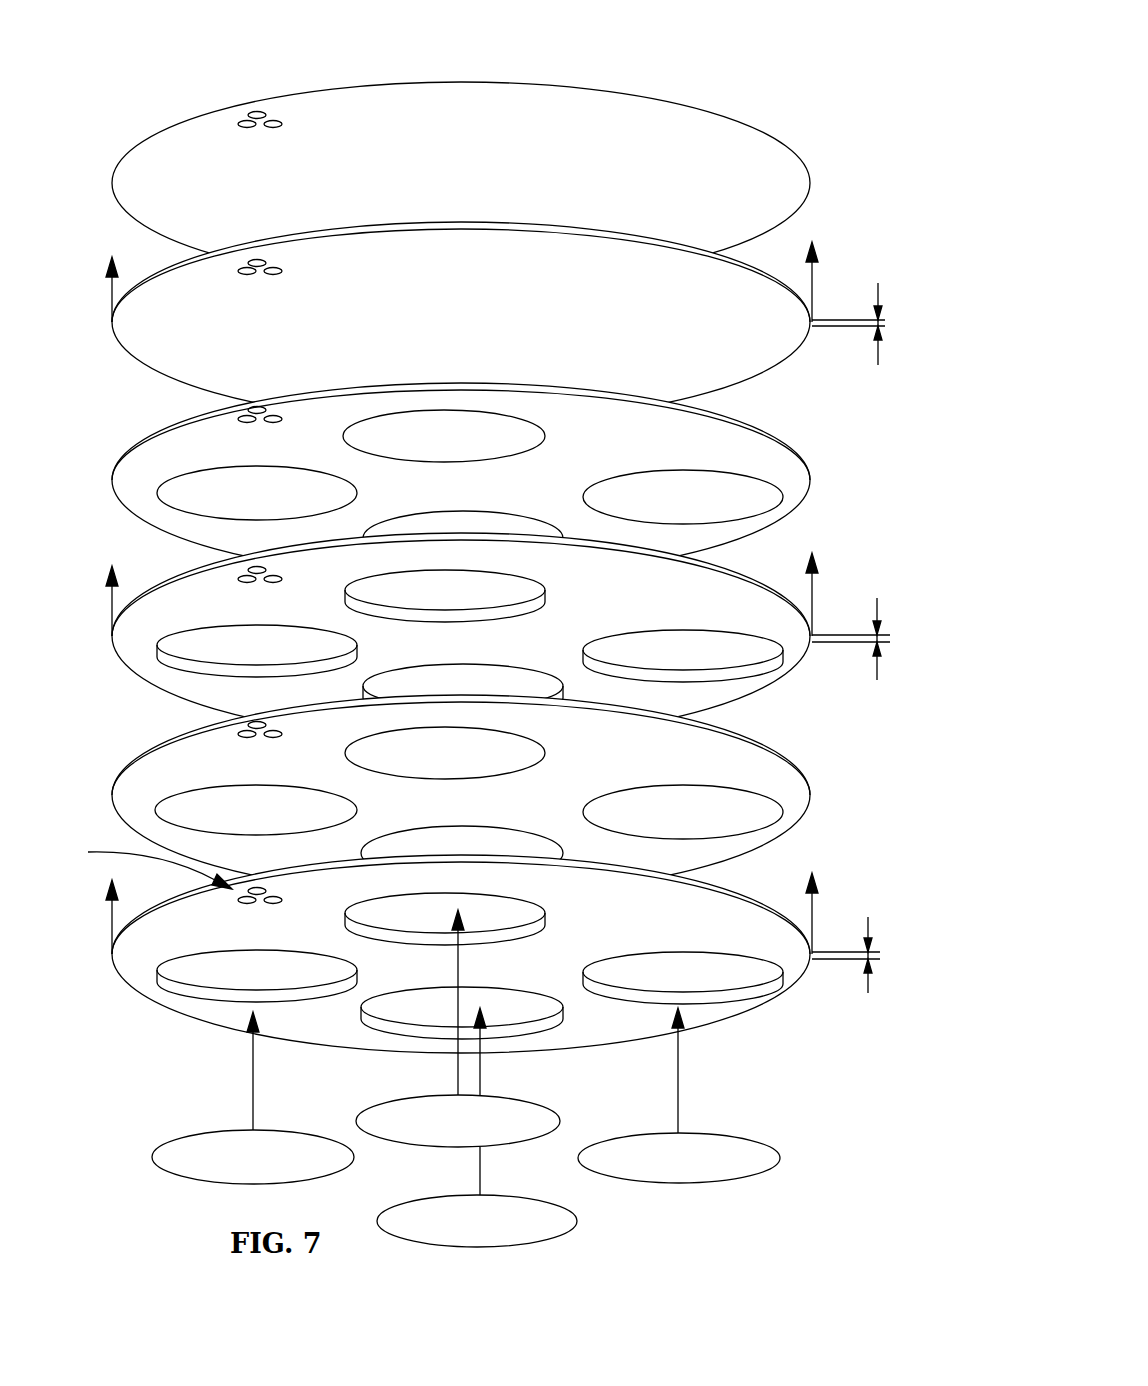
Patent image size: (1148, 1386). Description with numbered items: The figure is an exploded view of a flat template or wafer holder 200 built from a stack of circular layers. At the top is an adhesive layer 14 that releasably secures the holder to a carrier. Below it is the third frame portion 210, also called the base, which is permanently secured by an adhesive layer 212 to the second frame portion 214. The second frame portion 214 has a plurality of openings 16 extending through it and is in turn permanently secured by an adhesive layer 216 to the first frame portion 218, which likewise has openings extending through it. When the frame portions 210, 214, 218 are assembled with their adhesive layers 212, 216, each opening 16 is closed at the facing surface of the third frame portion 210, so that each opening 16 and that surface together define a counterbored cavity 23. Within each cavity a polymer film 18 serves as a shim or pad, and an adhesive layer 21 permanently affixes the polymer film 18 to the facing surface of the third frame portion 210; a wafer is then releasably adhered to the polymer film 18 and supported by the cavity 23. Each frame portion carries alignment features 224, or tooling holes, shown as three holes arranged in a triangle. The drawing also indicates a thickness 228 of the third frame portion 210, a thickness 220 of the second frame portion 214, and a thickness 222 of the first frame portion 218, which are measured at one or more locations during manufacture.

The wafer holder 200 is at (763, 88).
The adhesive layer 14 is at (668, 187).
The third frame portion 210 is at (680, 332).
The adhesive layer 212 is at (789, 441).
The second frame portion 214 is at (682, 607).
The adhesive layer 216 is at (789, 757).
The first frame portion 218 is at (685, 934).
The opening 16 is at (197, 666).
The cavity 23 is at (233, 667).
The polymer film 18 is at (454, 1078).
The adhesive layer 21 is at (172, 1140).
The thickness 228 is at (885, 323).
The thickness 220 is at (890, 640).
The thickness 222 is at (880, 957).
The alignment features 224 is at (138, 865).